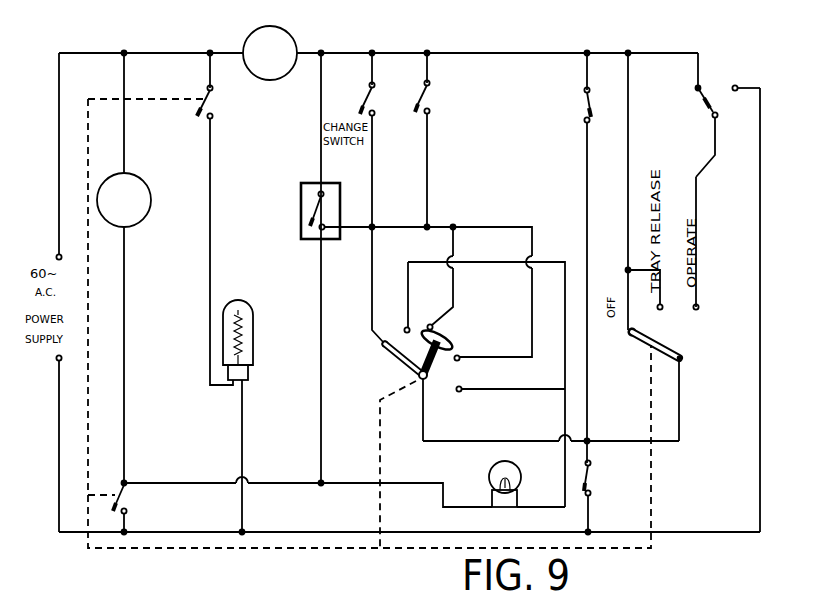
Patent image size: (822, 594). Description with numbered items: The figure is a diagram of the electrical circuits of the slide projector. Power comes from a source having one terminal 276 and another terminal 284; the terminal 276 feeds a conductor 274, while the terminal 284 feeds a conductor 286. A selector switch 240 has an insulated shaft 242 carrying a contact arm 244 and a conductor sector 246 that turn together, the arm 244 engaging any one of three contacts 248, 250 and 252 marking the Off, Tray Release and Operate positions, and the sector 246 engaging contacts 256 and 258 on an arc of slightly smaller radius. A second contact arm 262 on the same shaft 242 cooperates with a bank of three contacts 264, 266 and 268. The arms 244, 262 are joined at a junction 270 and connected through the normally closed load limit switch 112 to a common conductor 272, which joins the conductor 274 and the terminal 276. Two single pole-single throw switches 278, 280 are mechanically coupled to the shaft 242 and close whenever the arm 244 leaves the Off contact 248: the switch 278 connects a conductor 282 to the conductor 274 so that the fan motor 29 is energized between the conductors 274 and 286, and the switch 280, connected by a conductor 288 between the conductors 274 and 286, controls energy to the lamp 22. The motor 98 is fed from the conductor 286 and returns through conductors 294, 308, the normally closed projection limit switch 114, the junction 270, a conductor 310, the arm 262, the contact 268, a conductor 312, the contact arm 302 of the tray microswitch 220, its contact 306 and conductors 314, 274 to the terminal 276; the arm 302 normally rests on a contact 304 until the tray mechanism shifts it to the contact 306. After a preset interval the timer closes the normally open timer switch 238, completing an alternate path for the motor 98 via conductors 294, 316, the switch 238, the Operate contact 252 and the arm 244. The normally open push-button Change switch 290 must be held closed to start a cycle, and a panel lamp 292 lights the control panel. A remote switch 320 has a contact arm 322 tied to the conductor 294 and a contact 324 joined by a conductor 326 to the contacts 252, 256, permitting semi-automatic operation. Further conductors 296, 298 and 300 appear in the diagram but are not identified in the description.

The lamp 22 is at (254, 310).
The fan motor 29 is at (142, 183).
The motor 98 is at (296, 38).
The load limit switch 112 is at (583, 496).
The projection limit switch 114 is at (591, 112).
The microswitch 220 is at (716, 125).
The timer switch 238 is at (418, 103).
The selector switch 240 is at (405, 372).
The insulated shaft 242 is at (418, 388).
The contact arm 244 is at (400, 357).
The conductor sector 246 is at (447, 341).
The Off contact 248 is at (382, 346).
The Tray Release contact 250 is at (404, 328).
The Operate contact 252 is at (429, 324).
The contact 256 is at (460, 360).
The contact 258 is at (462, 391).
The contact arm 262 is at (648, 350).
The contact 264 is at (630, 334).
The contact 266 is at (659, 310).
The contact 268 is at (697, 311).
The junction 270 is at (590, 440).
The common conductor 272 is at (590, 514).
The conductor 274 is at (350, 530).
The terminal 276 is at (57, 361).
The single pole-single throw switch 278 is at (134, 493).
The single pole-single throw switch 280 is at (213, 98).
The conductor 282 is at (125, 308).
The terminal 284 is at (57, 255).
The conductor 286 is at (158, 52).
The conductor 288 is at (203, 63).
The Change switch 290 is at (369, 90).
The panel lamp 292 is at (514, 468).
The conductor 294 is at (348, 52).
The conductor 296 is at (373, 67).
The conductor 298 is at (320, 405).
The conductor 300 is at (303, 462).
The contact arm 302 is at (706, 104).
The contact 304 is at (699, 84).
The contact 306 is at (740, 86).
The conductor 308 is at (588, 68).
The conductor 310 is at (681, 384).
The conductor 312 is at (698, 188).
The conductor 314 is at (762, 250).
The conductor 316 is at (429, 67).
The remote switch 320 is at (301, 185).
The contact arm 322 is at (310, 210).
The contact 324 is at (321, 232).
The conductor 326 is at (458, 226).